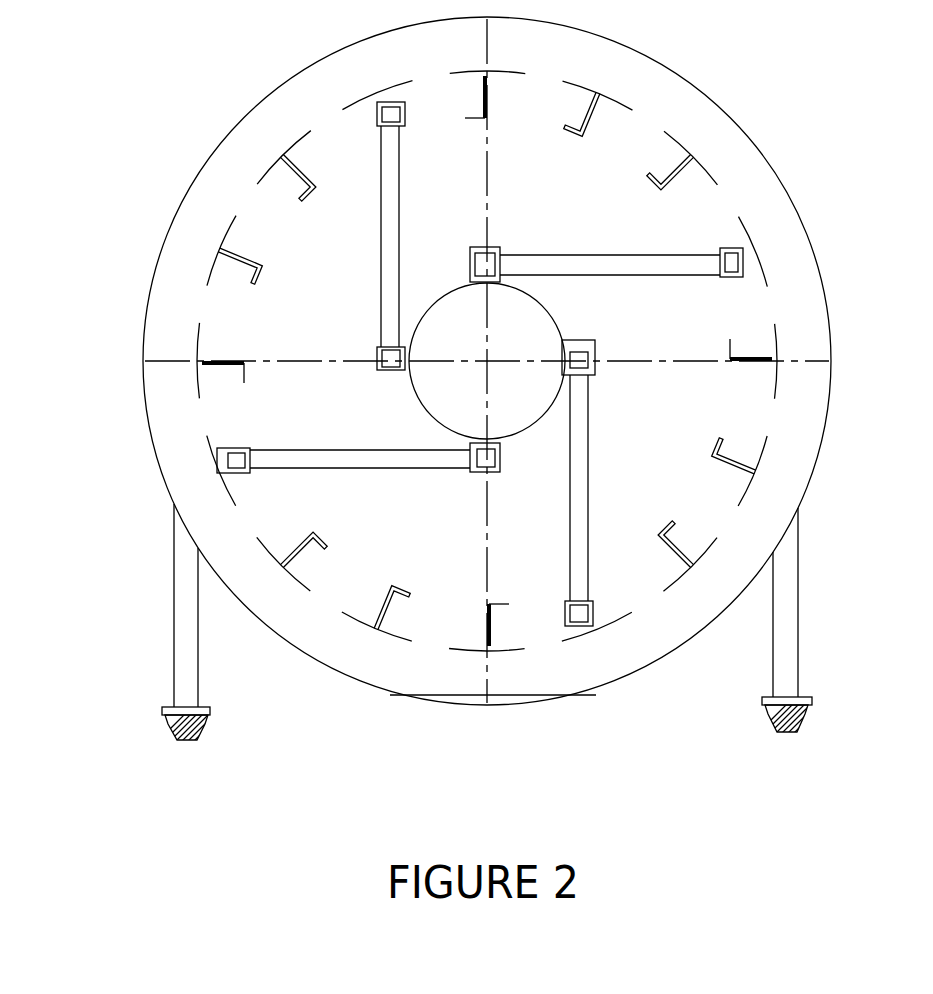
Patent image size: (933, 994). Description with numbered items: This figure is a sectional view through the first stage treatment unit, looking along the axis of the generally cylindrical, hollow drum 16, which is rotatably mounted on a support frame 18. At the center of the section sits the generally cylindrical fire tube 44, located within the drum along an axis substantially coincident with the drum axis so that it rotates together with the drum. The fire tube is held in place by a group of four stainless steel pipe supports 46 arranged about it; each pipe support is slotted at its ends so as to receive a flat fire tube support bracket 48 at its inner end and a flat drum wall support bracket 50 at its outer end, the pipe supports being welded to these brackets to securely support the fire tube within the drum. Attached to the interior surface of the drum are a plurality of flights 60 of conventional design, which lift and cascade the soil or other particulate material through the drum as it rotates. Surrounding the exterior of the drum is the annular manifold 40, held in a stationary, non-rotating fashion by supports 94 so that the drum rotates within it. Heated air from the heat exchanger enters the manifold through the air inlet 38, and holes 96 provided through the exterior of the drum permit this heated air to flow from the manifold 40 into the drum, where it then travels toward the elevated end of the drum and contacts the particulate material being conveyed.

The drum 16 is at (489, 66).
The support frame 18 is at (202, 735).
The air inlet 38 is at (499, 713).
The annular manifold 40 is at (752, 136).
The fire tube 44 is at (547, 310).
The pipe supports 46 is at (380, 195).
The fire tube support bracket 48 is at (593, 345).
The drum wall support bracket 50 is at (730, 282).
The flights 60 is at (262, 278).
The supports 94 is at (174, 652).
The holes 96 is at (322, 118).